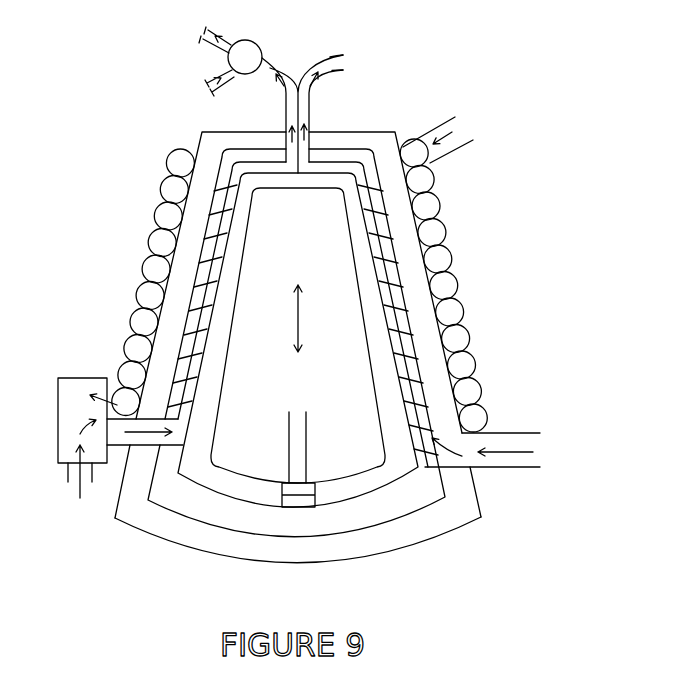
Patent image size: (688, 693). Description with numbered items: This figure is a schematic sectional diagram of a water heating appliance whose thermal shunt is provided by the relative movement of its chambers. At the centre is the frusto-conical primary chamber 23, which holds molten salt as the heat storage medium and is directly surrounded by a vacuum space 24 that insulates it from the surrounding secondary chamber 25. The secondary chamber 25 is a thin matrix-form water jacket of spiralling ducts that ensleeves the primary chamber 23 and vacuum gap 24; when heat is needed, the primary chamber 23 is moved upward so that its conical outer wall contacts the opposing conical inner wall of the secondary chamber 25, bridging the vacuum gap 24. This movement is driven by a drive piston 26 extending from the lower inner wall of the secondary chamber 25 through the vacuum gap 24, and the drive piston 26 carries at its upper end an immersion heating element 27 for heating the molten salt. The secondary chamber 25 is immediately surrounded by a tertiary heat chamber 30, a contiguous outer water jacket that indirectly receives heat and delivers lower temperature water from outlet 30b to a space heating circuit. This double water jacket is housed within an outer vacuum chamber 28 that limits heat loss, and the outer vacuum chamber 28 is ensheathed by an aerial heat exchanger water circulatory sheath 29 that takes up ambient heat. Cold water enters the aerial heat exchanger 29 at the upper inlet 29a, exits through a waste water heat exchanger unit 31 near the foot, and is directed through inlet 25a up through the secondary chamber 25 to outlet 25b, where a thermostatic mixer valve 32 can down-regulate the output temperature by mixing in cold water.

The primary chamber 23 is at (358, 288).
The vacuum space 24 is at (190, 511).
The secondary chamber 25 is at (207, 297).
The inlet 25a is at (115, 518).
The outlet 25b is at (285, 115).
The drive piston 26 is at (312, 495).
The immersion heating element 27 is at (306, 457).
The outer vacuum chamber 28 is at (412, 522).
The aerial heat exchanger water circulatory sheath 29 is at (462, 306).
The upper inlet 29a is at (457, 136).
The tertiary heat chamber 30 is at (427, 415).
The outlet 30b is at (310, 115).
The waste water heat exchanger unit 31 is at (84, 378).
The thermostatic mixer valve 32 is at (250, 47).